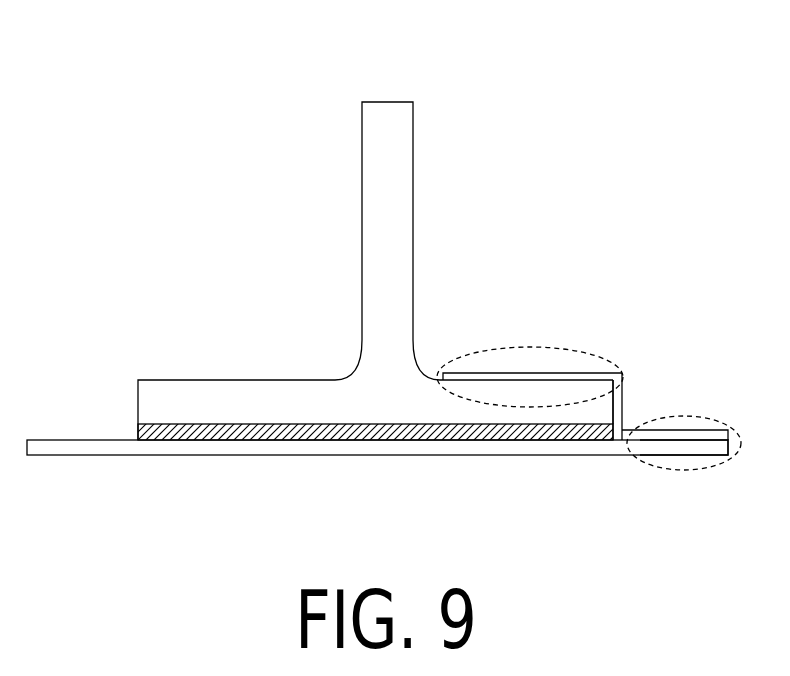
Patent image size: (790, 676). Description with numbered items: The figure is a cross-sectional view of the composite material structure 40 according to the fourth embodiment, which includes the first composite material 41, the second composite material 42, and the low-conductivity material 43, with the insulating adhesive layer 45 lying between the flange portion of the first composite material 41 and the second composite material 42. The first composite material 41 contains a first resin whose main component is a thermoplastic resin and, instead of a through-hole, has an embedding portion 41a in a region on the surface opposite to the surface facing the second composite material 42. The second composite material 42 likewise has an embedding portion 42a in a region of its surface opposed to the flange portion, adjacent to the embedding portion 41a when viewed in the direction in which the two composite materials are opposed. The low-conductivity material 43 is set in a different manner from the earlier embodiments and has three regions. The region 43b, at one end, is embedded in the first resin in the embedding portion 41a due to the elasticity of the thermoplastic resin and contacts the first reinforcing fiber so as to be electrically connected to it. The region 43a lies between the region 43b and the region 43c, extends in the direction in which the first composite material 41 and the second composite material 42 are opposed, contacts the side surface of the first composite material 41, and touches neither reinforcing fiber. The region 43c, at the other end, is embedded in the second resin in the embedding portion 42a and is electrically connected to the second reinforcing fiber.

The composite material structure 40 is at (434, 77).
The first composite material 41 is at (395, 133).
The embedding portion 41a is at (466, 376).
The second composite material 42 is at (75, 438).
The embedding portion 42a is at (713, 428).
The low-conductivity material 43 is at (590, 362).
The region 43a is at (623, 393).
The region 43b is at (553, 347).
The region 43c is at (672, 470).
The insulating adhesive layer 45 is at (285, 440).